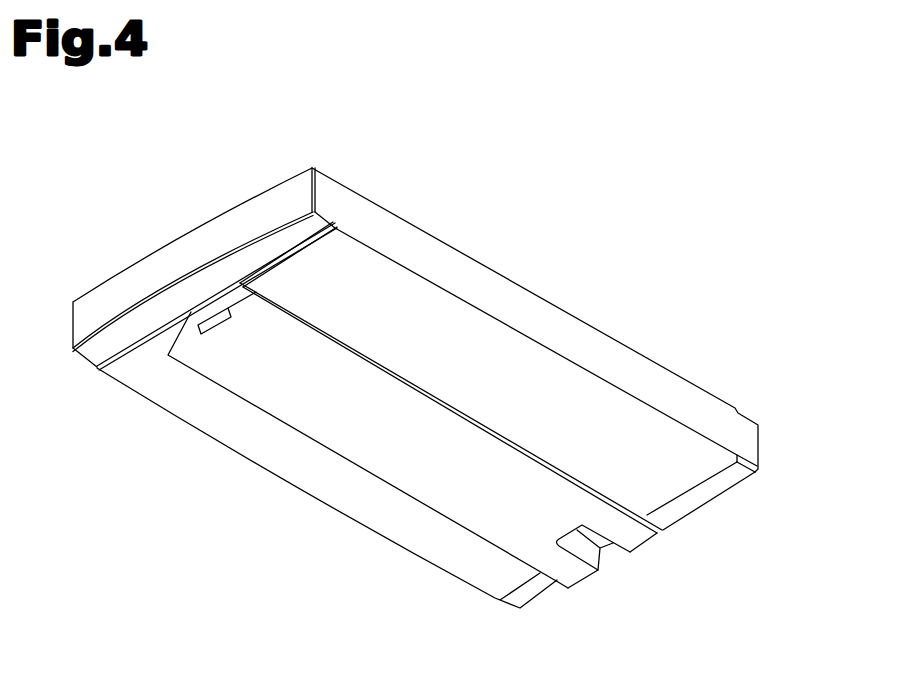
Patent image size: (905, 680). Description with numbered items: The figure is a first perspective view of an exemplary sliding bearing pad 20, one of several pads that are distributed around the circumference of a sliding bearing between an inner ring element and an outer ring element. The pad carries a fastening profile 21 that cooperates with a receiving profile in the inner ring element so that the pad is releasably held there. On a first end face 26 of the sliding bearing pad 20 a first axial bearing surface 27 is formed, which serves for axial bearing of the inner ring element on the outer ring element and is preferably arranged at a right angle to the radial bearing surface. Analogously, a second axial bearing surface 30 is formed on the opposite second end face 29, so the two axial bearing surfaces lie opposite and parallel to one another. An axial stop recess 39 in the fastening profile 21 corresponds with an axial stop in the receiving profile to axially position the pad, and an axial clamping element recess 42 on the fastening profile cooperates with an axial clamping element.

The sliding bearing pad 20 is at (233, 158).
The fastening profile 21 is at (383, 437).
The first end face 26 is at (760, 540).
The first axial bearing surface 27 is at (734, 478).
The second end face 29 is at (118, 194).
The second axial bearing surface 30 is at (255, 213).
The axial stop recess 39 is at (616, 562).
The axial clamping element recess 42 is at (212, 327).